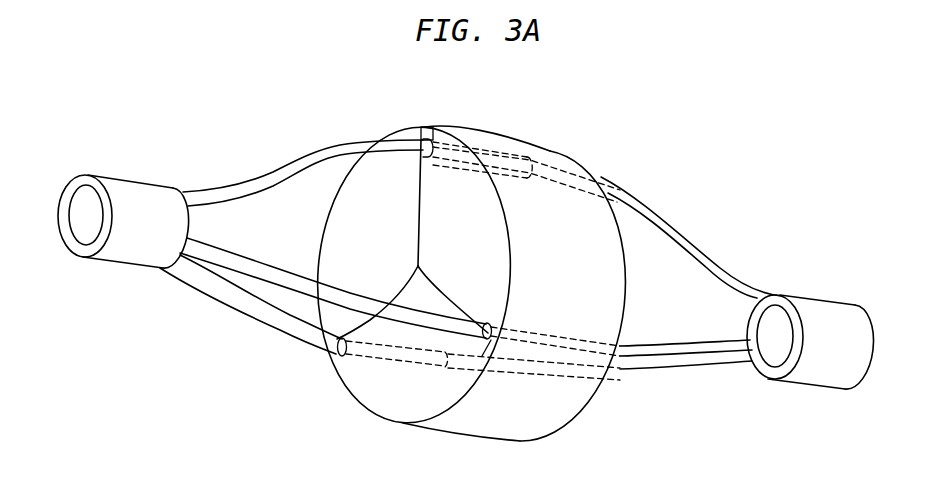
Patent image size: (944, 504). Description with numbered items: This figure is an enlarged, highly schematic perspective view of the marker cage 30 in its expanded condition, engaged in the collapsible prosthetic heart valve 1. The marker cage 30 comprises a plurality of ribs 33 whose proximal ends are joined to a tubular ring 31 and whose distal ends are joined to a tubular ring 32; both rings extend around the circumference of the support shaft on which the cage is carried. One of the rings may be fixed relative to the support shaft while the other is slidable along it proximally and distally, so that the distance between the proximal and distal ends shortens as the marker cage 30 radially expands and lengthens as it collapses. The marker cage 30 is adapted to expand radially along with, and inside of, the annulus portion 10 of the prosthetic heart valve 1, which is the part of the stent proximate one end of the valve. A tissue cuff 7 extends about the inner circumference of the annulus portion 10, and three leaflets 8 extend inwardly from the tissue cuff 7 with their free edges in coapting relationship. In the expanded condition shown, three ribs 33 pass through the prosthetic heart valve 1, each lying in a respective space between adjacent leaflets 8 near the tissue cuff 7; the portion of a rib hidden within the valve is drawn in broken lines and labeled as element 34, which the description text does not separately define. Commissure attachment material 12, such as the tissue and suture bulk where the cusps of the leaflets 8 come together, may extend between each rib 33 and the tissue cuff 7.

The collapsible prosthetic heart valve 1 is at (513, 127).
The tissue cuff 7 is at (582, 158).
The leaflets 8 is at (365, 215).
The annulus portion 10 is at (563, 413).
The commissure attachment material 12 is at (333, 349).
The marker cage 30 is at (266, 165).
The tubular ring 31 is at (132, 190).
The tubular ring 32 is at (820, 312).
The ribs 33 is at (360, 145).
The inner tube 34 is at (490, 148).